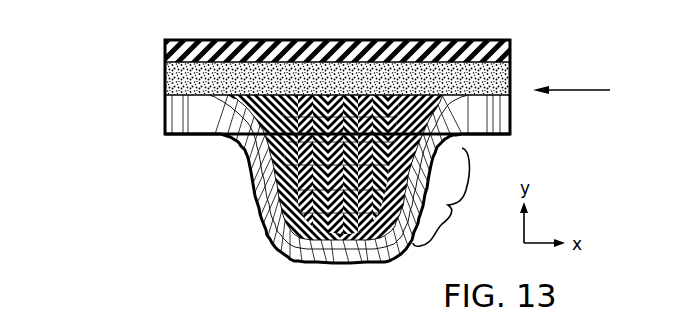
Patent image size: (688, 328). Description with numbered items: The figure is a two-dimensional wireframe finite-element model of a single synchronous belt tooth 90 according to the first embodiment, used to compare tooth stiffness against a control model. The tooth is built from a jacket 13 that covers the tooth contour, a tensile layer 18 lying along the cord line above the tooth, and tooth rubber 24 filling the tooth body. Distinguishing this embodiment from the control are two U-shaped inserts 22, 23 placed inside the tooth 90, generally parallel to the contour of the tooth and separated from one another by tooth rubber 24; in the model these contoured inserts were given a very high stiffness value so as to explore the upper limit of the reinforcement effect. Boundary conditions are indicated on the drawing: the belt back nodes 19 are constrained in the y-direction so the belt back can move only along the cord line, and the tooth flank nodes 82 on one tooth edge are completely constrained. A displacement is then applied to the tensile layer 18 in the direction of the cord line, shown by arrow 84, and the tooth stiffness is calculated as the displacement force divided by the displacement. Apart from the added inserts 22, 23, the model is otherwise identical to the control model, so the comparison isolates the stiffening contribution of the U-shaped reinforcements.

The tooth 90 is at (122, 50).
The belt back nodes 19 is at (348, 50).
The tensile layer 18 is at (165, 82).
The jacket 13 is at (303, 250).
The tooth rubber 24 is at (273, 121).
The U-shaped insert 23 is at (282, 152).
The U-shaped insert 22 is at (298, 194).
The tooth flank nodes 82 is at (458, 197).
The arrow 84 is at (587, 90).